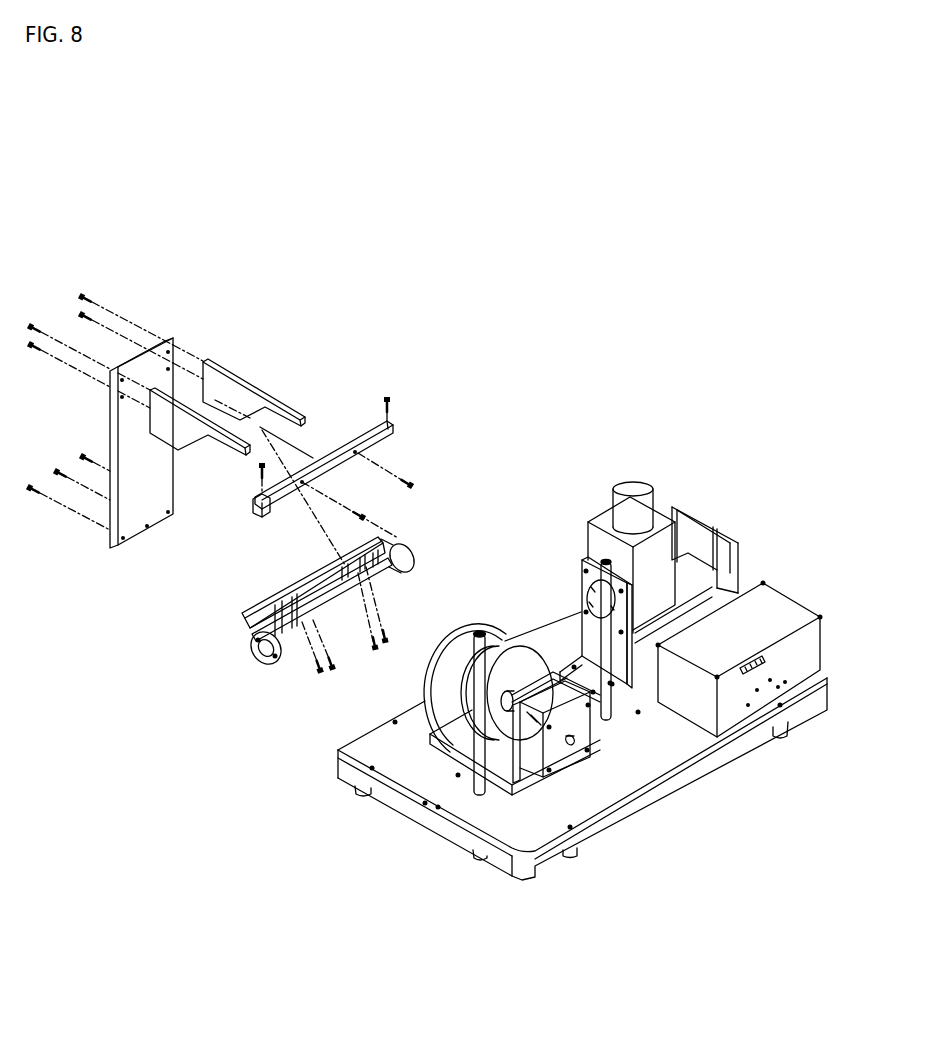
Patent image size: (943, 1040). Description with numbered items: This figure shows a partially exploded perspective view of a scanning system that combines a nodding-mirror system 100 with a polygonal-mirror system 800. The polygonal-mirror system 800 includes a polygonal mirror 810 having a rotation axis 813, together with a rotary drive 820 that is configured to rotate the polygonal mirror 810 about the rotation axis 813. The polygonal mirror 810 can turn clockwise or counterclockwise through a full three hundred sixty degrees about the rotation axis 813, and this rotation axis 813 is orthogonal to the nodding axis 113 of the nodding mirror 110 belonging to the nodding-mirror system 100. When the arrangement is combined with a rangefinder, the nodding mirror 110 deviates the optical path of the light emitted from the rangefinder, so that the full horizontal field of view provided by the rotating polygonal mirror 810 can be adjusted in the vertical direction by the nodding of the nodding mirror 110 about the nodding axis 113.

The nodding-mirror system 100 is at (222, 514).
The nodding mirror 110 is at (303, 632).
The nodding axis 113 is at (237, 676).
The polygonal-mirror system 800 is at (598, 790).
The polygonal mirror 810 is at (500, 678).
The rotation axis 813 is at (389, 642).
The rotary drive 820 is at (584, 759).